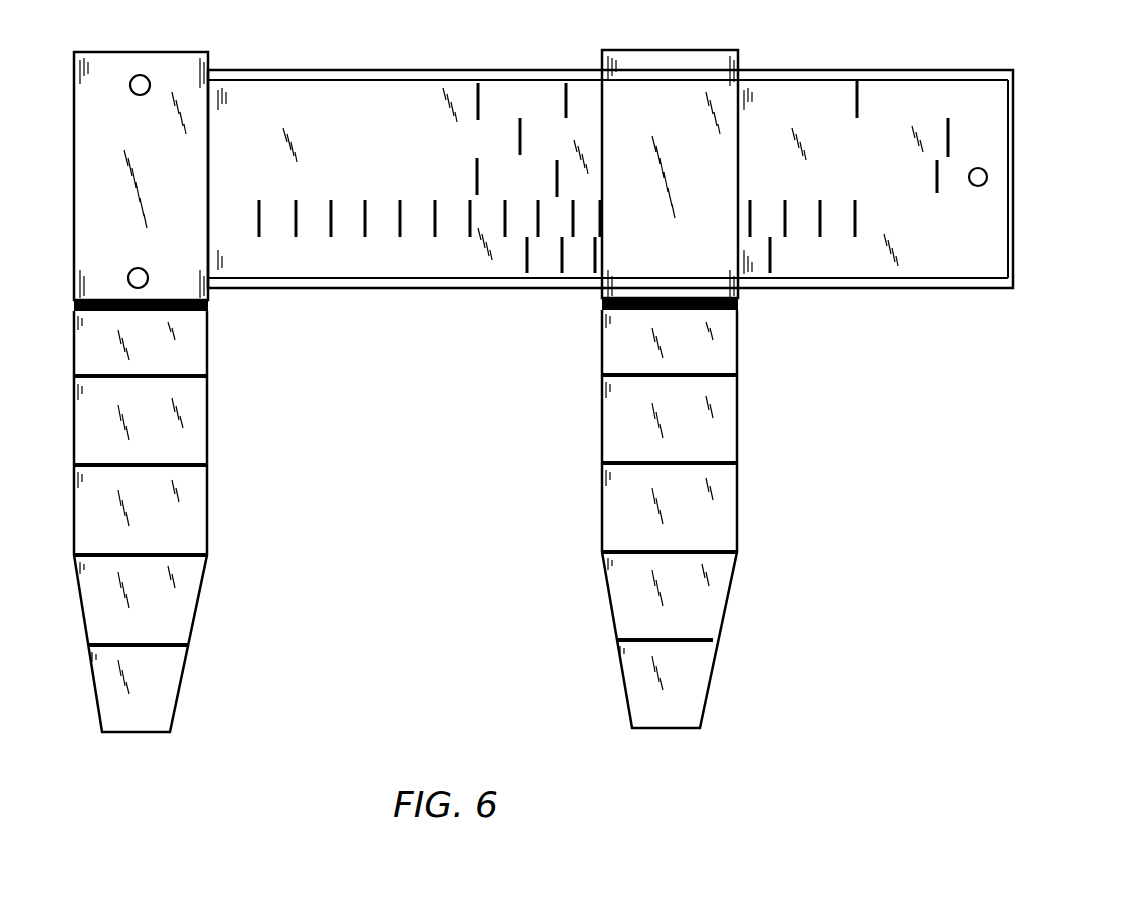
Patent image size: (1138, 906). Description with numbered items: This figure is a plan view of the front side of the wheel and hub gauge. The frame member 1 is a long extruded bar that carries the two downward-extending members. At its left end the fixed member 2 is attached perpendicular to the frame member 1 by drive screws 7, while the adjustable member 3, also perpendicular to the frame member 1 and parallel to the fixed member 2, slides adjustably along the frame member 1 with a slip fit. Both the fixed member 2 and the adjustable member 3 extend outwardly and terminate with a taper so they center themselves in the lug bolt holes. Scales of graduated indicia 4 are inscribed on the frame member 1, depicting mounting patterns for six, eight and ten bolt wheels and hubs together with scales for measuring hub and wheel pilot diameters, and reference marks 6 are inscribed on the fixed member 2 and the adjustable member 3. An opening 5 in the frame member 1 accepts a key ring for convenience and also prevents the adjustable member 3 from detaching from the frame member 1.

The frame member 1 is at (393, 70).
The fixed member 2 is at (188, 57).
The adjustable member 3 is at (713, 55).
The scales of graduated indicia 4 is at (860, 95).
The opening 5 is at (987, 173).
The reference marks 6 is at (194, 374).
The drive screws 7 is at (144, 75).